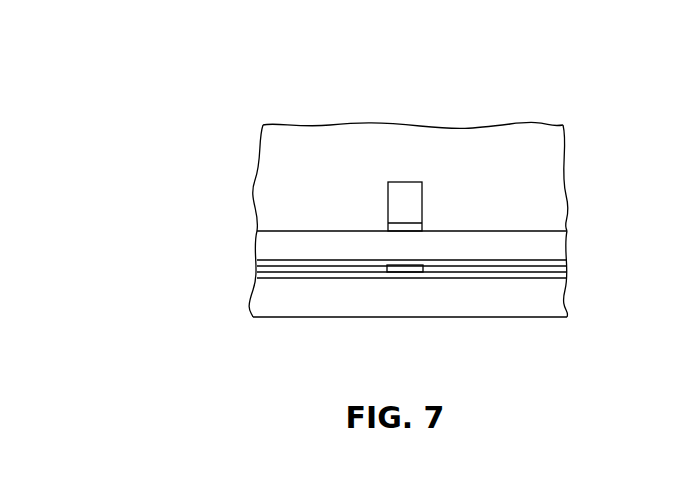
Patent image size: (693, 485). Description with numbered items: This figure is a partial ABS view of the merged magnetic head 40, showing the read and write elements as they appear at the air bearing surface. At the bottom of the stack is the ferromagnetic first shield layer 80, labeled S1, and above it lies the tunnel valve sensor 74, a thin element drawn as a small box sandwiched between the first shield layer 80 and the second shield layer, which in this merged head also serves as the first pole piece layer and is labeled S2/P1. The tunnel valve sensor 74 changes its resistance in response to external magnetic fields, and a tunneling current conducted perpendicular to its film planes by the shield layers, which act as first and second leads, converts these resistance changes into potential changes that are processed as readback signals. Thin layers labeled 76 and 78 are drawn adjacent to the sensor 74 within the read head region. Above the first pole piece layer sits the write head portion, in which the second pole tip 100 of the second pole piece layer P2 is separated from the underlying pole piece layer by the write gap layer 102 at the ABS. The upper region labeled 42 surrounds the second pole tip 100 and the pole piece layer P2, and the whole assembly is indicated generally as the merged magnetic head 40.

The merged magnetic head 40 is at (399, 230).
The upper layer 42 is at (262, 157).
The second pole tip 100 is at (371, 154).
The write gap layer 102 is at (400, 222).
The layer 78 is at (530, 263).
The tunnel valve sensor 74 is at (407, 273).
The layer 76 is at (318, 280).
The first shield layer 80 is at (558, 298).
The pillar P2 is at (413, 208).